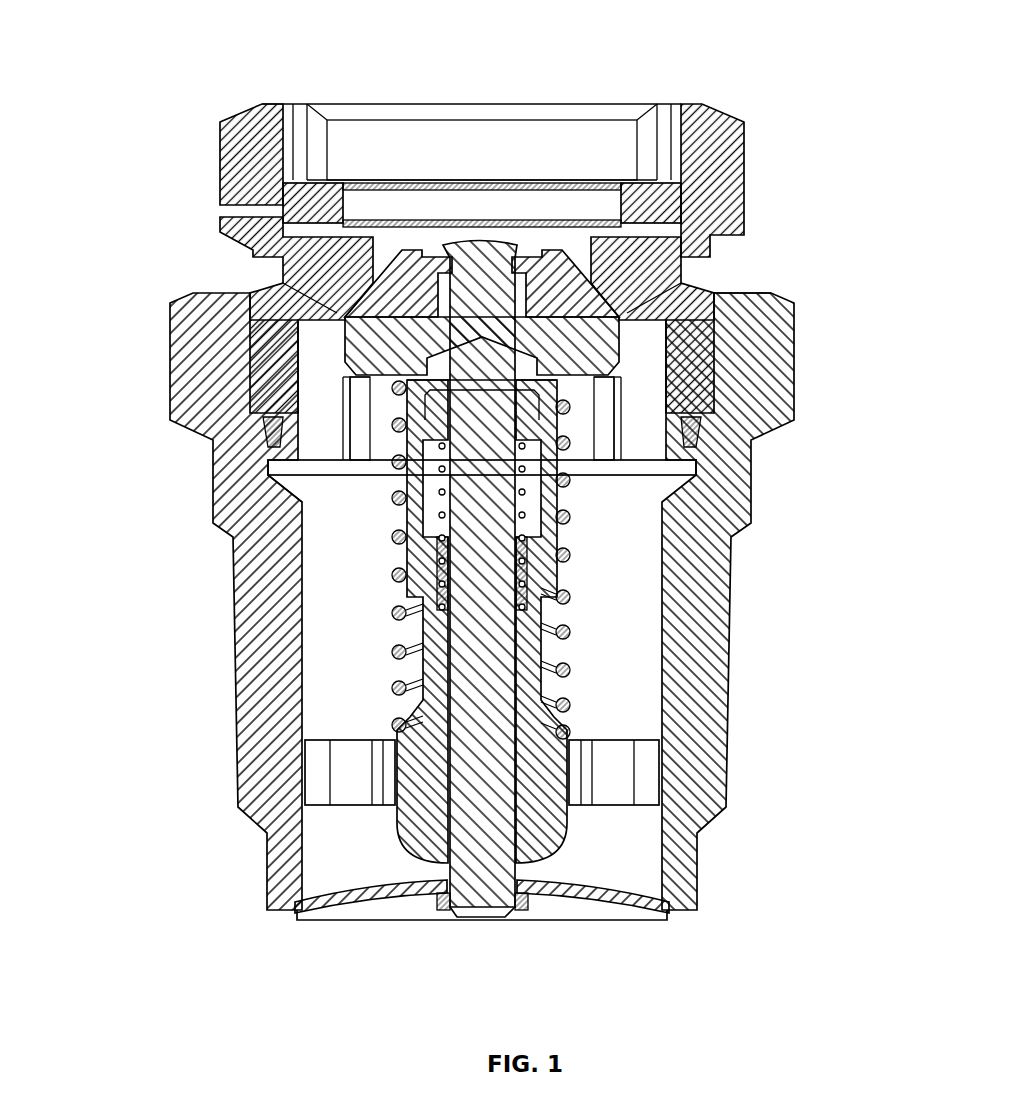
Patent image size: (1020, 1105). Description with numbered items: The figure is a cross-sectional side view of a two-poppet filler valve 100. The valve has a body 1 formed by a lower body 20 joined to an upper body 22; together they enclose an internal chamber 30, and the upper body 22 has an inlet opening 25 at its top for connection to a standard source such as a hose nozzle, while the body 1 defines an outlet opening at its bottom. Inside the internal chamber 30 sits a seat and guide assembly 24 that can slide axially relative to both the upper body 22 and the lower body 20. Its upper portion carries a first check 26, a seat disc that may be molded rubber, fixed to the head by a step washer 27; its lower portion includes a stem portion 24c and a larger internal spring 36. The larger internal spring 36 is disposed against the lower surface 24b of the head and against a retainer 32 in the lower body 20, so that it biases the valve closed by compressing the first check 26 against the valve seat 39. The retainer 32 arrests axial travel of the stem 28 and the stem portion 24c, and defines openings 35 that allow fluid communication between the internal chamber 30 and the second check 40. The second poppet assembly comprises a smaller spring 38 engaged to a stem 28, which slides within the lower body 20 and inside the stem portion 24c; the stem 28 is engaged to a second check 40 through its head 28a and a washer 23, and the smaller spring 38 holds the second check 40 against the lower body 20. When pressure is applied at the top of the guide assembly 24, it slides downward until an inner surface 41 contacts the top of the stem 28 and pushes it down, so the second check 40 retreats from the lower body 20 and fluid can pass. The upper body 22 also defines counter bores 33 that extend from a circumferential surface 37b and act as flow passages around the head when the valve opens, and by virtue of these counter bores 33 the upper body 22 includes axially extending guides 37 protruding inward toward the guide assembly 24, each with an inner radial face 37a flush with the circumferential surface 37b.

The filler valve 100 is at (222, 36).
The body 1 is at (806, 265).
The lower body 20 is at (733, 580).
The upper body 22 is at (733, 135).
The washer 23 is at (520, 900).
The seat and guide assembly 24 is at (625, 345).
The lower surface of head 24b is at (268, 462).
The stem portion 24c is at (392, 558).
The inlet opening 25 is at (267, 104).
The first check 26 is at (383, 298).
The step washer 27 is at (547, 255).
The stem 28 is at (490, 573).
The head 28a is at (482, 905).
The internal chamber 30 is at (322, 646).
The retainer 32 is at (318, 768).
The counter bores 33 is at (648, 333).
The openings 35 is at (610, 752).
The larger internal spring 36 is at (556, 592).
The axially extending guides 37 is at (357, 397).
The inner radial face 37a is at (360, 418).
The circumferential surface 37b is at (343, 297).
The smaller spring 38 is at (565, 522).
The valve seat 39 is at (603, 283).
The second check 40 is at (355, 895).
The inner surface 41 is at (608, 398).